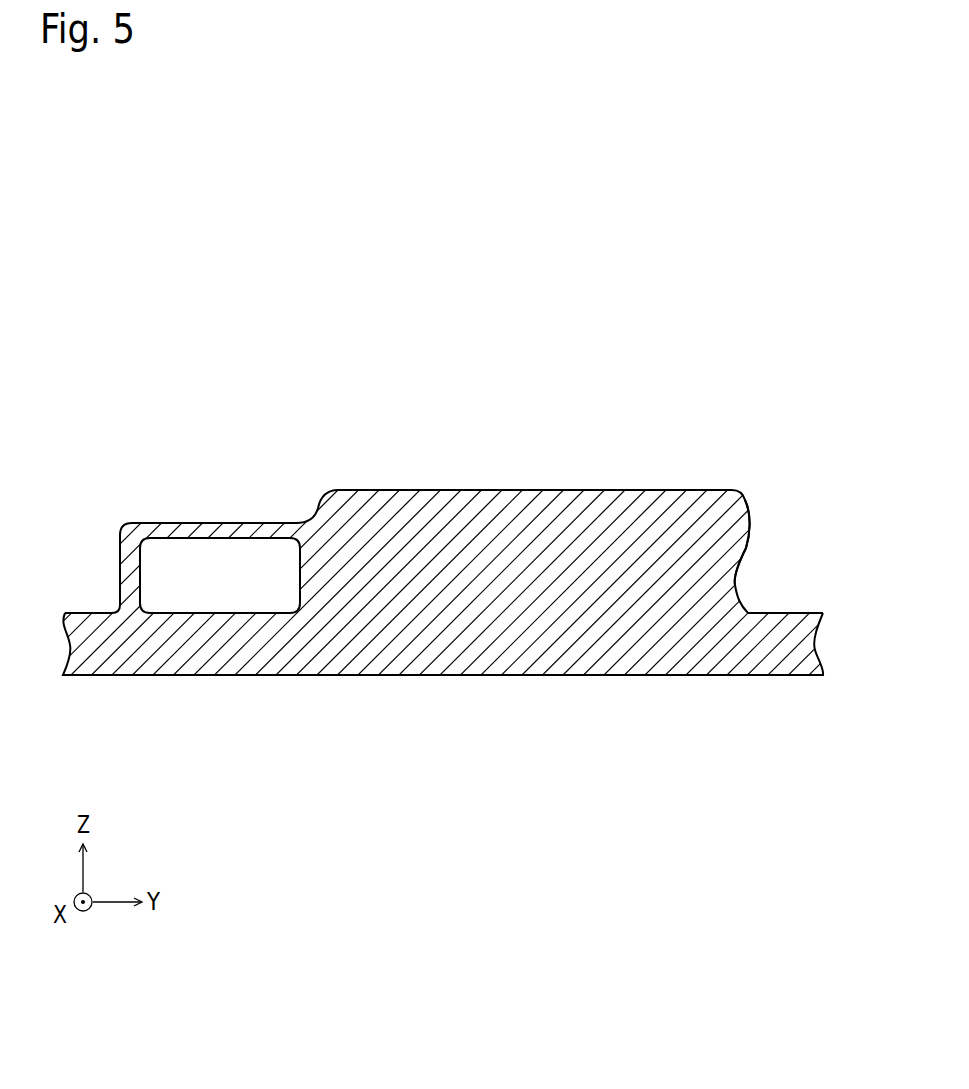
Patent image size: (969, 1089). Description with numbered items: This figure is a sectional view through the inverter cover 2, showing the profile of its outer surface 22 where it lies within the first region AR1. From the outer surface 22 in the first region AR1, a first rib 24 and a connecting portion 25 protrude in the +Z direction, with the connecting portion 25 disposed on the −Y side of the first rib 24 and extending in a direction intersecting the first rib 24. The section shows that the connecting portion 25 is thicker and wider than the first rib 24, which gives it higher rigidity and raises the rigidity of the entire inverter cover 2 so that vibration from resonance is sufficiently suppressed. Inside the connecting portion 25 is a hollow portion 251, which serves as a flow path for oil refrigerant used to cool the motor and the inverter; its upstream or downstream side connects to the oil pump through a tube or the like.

The inverter cover 2 is at (484, 515).
The outer surface 22 is at (801, 605).
The first rib 24 is at (523, 510).
The connecting portion 25 is at (210, 526).
The hollow portion 251 is at (235, 588).
The first region AR1 is at (795, 488).